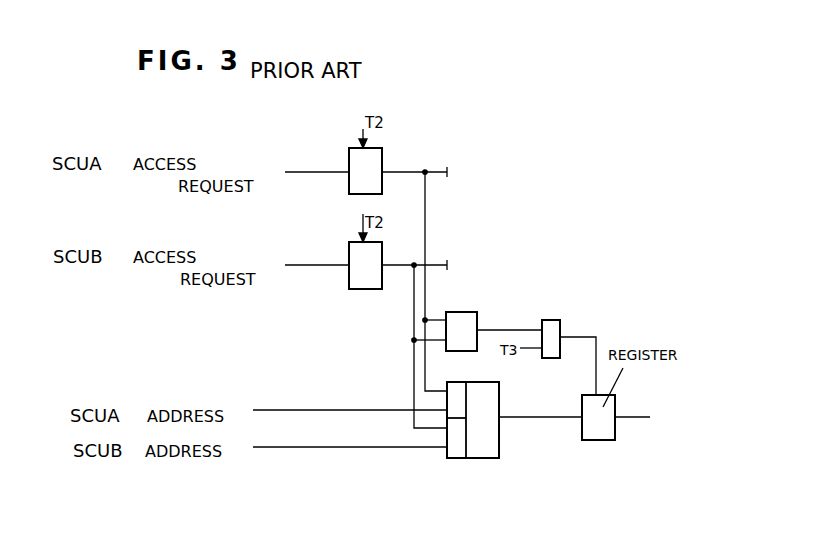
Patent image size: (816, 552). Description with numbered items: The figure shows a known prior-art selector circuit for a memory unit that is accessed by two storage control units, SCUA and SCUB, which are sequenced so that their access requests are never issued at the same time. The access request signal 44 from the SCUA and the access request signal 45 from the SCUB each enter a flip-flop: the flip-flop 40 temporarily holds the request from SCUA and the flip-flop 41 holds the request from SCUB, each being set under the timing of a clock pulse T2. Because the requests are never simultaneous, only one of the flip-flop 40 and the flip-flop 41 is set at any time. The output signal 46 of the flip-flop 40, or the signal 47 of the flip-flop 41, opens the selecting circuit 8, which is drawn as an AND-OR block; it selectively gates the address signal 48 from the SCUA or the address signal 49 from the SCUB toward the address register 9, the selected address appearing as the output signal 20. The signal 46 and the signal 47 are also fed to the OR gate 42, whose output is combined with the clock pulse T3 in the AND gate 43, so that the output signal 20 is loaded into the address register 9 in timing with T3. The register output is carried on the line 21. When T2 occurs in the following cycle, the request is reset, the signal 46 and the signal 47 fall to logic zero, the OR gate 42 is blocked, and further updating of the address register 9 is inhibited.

The flip-flop 40 is at (352, 149).
The flip-flop 41 is at (349, 280).
The OR gate 42 is at (468, 312).
The AND gate 43 is at (548, 320).
The access request signal 44 is at (313, 172).
The access request signal 45 is at (303, 265).
The signal 46 is at (405, 172).
The signal 47 is at (397, 268).
The address signal 48 is at (385, 410).
The address signal 49 is at (350, 447).
The selecting circuit 8 is at (499, 428).
The output signal 20 is at (530, 417).
The address register 9 is at (603, 441).
The register output line 21 is at (632, 417).